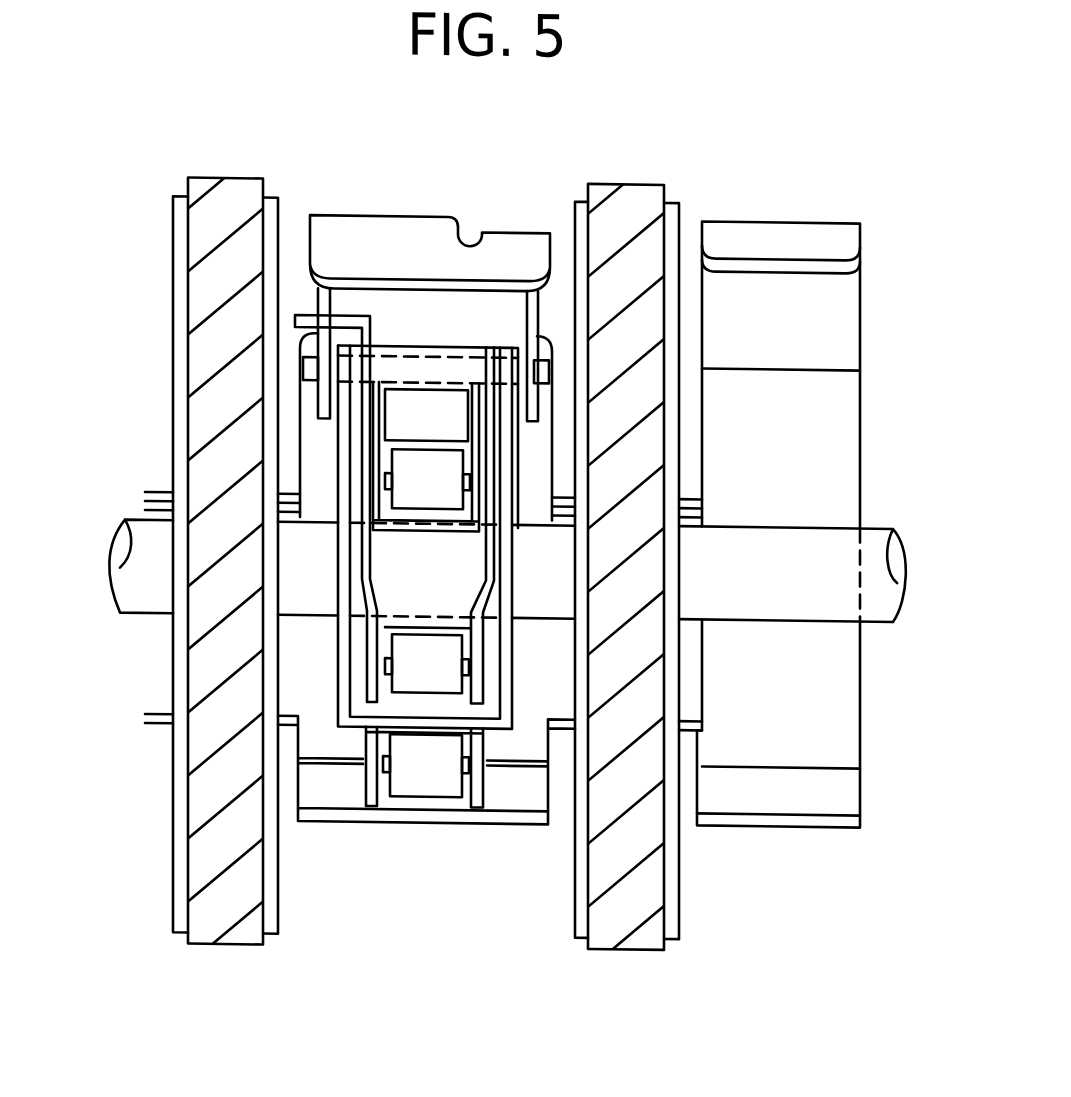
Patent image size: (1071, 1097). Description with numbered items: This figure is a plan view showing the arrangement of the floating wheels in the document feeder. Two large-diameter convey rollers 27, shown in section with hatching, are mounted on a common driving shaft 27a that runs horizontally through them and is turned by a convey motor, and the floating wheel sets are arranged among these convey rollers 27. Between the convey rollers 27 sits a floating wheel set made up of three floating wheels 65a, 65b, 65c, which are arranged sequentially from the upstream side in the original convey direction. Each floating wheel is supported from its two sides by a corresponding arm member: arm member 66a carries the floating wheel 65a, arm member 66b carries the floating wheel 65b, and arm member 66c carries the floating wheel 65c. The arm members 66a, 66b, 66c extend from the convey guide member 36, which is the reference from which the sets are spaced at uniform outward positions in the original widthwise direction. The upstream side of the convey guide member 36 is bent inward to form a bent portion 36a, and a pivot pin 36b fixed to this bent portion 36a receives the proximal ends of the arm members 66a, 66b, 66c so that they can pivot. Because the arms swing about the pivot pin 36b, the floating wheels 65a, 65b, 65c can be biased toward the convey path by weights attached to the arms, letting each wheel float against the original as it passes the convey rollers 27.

The convey roller 27 is at (232, 932).
The driving shaft 27a is at (872, 527).
The convey guide member 36 is at (430, 296).
The bent portion 36a is at (326, 229).
The pivot pin 36b is at (303, 370).
The arm member 66a is at (452, 376).
The arm member 66b is at (360, 585).
The arm member 66c is at (372, 803).
The floating wheel 65a is at (398, 465).
The floating wheel 65b is at (398, 680).
The floating wheel 65c is at (428, 789).